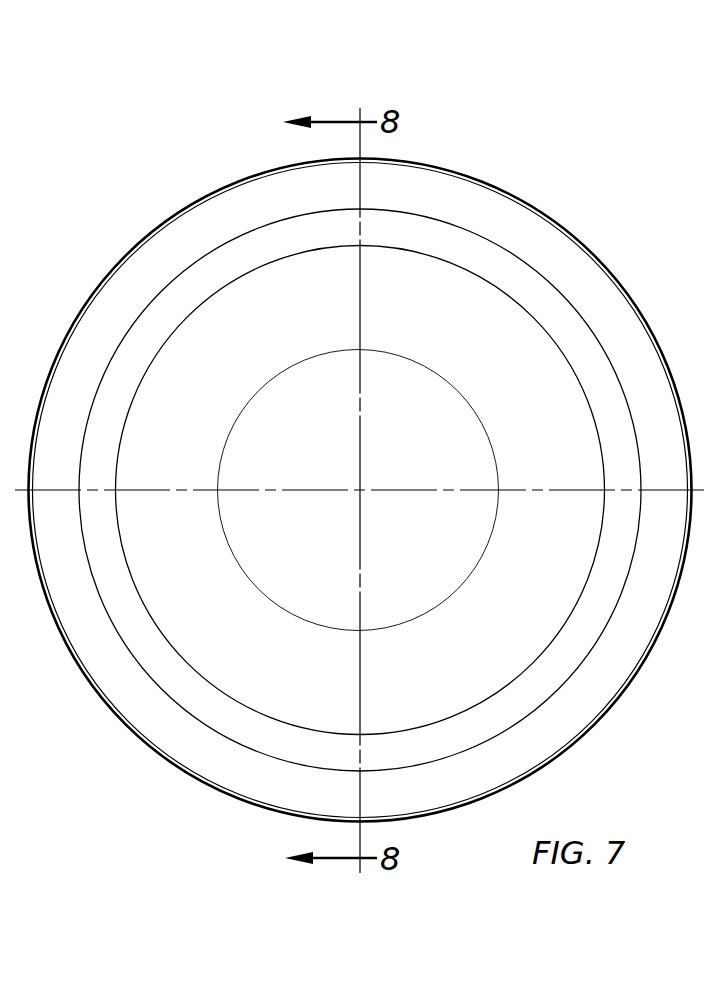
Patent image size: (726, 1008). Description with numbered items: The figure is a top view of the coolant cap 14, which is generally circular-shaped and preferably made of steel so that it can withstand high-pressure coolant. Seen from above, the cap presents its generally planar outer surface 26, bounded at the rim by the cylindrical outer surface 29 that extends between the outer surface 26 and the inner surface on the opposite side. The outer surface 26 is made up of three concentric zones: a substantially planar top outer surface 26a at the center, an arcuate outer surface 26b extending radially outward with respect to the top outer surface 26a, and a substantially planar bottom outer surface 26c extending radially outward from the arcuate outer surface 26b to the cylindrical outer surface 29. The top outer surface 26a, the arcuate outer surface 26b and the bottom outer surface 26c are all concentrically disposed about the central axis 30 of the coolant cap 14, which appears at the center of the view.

The coolant cap 14 is at (94, 147).
The outer surface 26 is at (367, 466).
The top outer surface 26a is at (417, 283).
The arcuate outer surface 26b is at (485, 260).
The bottom outer surface 26c is at (563, 273).
The cylindrical outer surface 29 is at (119, 236).
The central axis 30 is at (361, 488).